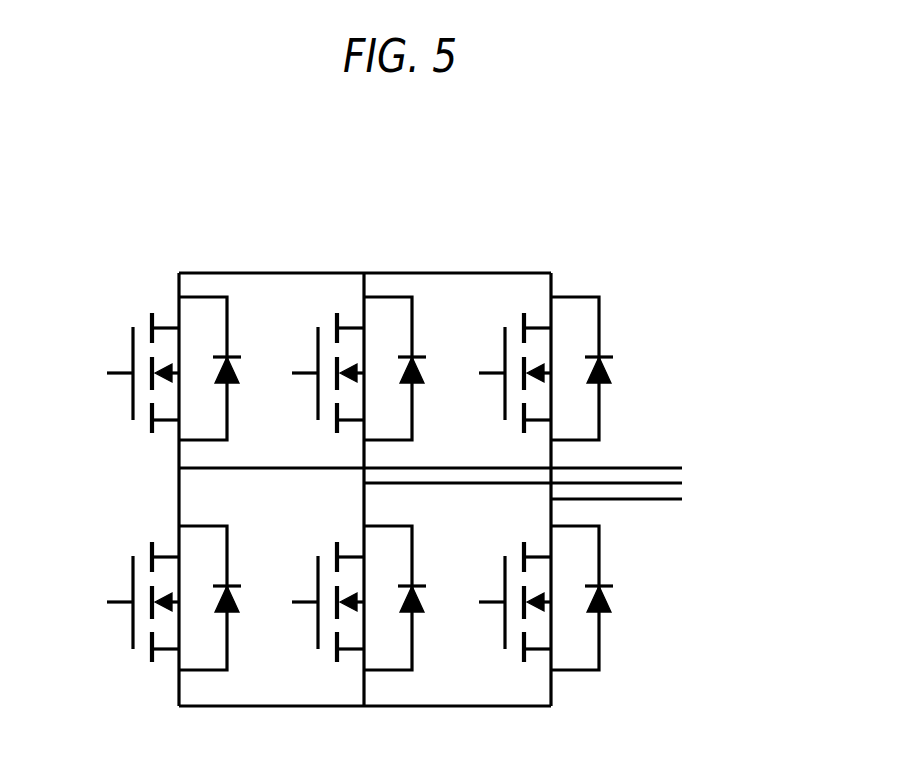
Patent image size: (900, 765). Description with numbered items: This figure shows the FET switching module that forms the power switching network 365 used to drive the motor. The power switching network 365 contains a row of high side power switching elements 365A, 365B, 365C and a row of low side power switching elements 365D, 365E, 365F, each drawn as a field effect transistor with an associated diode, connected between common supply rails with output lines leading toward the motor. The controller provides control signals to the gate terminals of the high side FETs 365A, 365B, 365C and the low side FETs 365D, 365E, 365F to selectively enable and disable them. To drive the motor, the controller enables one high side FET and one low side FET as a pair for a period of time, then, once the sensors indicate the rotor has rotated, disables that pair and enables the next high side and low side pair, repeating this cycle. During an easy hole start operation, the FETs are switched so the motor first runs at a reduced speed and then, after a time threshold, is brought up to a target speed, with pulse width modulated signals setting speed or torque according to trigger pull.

The power switching network 365 is at (752, 185).
The high side power switching element 365A is at (179, 312).
The high side power switching element 365B is at (364, 312).
The high side power switching element 365C is at (551, 312).
The low side power switching element 365D is at (179, 633).
The low side power switching element 365E is at (364, 633).
The low side power switching element 365F is at (551, 633).